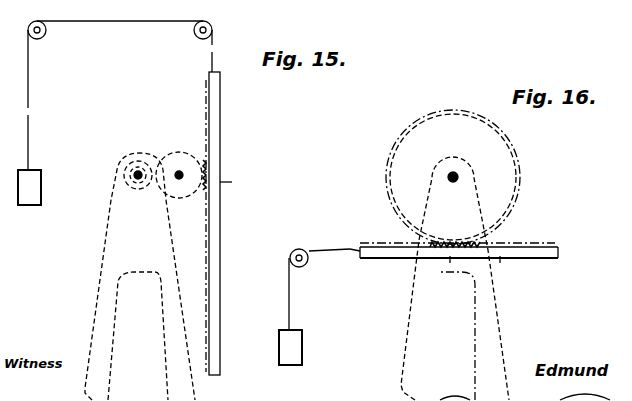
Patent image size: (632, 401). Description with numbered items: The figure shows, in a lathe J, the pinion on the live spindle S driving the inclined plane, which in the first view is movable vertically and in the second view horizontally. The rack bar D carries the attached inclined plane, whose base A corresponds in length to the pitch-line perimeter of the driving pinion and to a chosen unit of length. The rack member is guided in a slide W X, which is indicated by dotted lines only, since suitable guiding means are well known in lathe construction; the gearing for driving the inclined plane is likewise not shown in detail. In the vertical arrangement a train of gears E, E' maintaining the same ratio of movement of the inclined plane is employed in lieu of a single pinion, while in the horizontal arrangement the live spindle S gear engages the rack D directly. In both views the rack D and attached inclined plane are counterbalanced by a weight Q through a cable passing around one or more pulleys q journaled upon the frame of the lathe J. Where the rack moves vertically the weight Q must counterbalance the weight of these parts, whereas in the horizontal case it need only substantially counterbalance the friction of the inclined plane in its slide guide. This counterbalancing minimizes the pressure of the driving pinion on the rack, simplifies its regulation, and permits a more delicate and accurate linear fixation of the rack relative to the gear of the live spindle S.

In FIG. 15, the pulley q is at (47, 33).
In FIG. 16, the pulley q is at (299, 247).
In FIG. 15, the weight Q is at (24, 213).
In FIG. 16, the weight Q is at (300, 352).
In FIG. 15, the slide guide X is at (221, 202).
In FIG. 16, the slide guide X is at (459, 243).
In FIG. 15, the slide guide W is at (222, 227).
In FIG. 16, the slide guide W is at (344, 239).
In FIG. 15, the gear E is at (122, 171).
In FIG. 16, the gear E is at (460, 177).
In FIG. 15, the gear E' is at (181, 163).
In FIG. 15, the live spindle S is at (128, 178).
In FIG. 16, the live spindle S is at (447, 177).
In FIG. 15, the base of the inclined plane A is at (232, 188).
In FIG. 16, the base of the inclined plane A is at (498, 258).
In FIG. 15, the rack bar D is at (206, 216).
In FIG. 16, the rack bar D is at (510, 247).
In FIG. 15, the lathe J is at (100, 236).
In FIG. 16, the lathe J is at (412, 325).